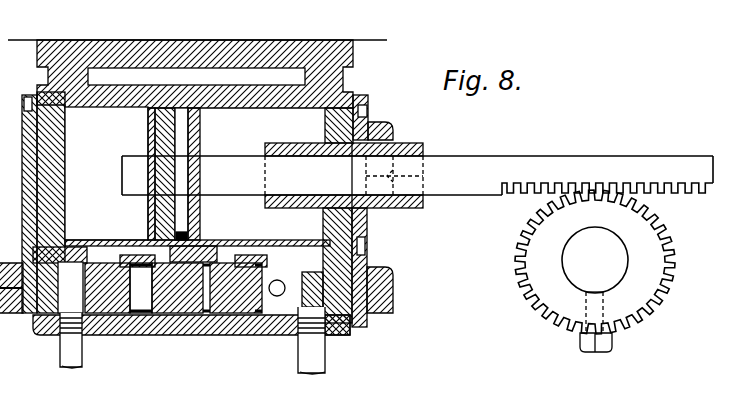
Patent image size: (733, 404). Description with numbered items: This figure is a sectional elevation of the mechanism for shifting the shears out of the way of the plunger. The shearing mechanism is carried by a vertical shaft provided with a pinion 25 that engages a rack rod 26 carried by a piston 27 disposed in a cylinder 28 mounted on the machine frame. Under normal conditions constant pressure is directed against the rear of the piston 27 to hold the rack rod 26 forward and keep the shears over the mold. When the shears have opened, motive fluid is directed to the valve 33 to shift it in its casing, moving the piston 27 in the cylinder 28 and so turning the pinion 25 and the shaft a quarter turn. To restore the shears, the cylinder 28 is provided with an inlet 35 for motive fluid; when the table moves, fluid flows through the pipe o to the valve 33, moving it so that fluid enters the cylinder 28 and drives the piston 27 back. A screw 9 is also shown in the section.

The screw 9 is at (75, 345).
The pinion 25 is at (542, 262).
The rack rod 26 is at (417, 175).
The piston 27 is at (200, 131).
The cylinder 28 is at (197, 176).
The valve 33 is at (178, 297).
The inlet 35 is at (320, 340).
The pipe O is at (298, 357).